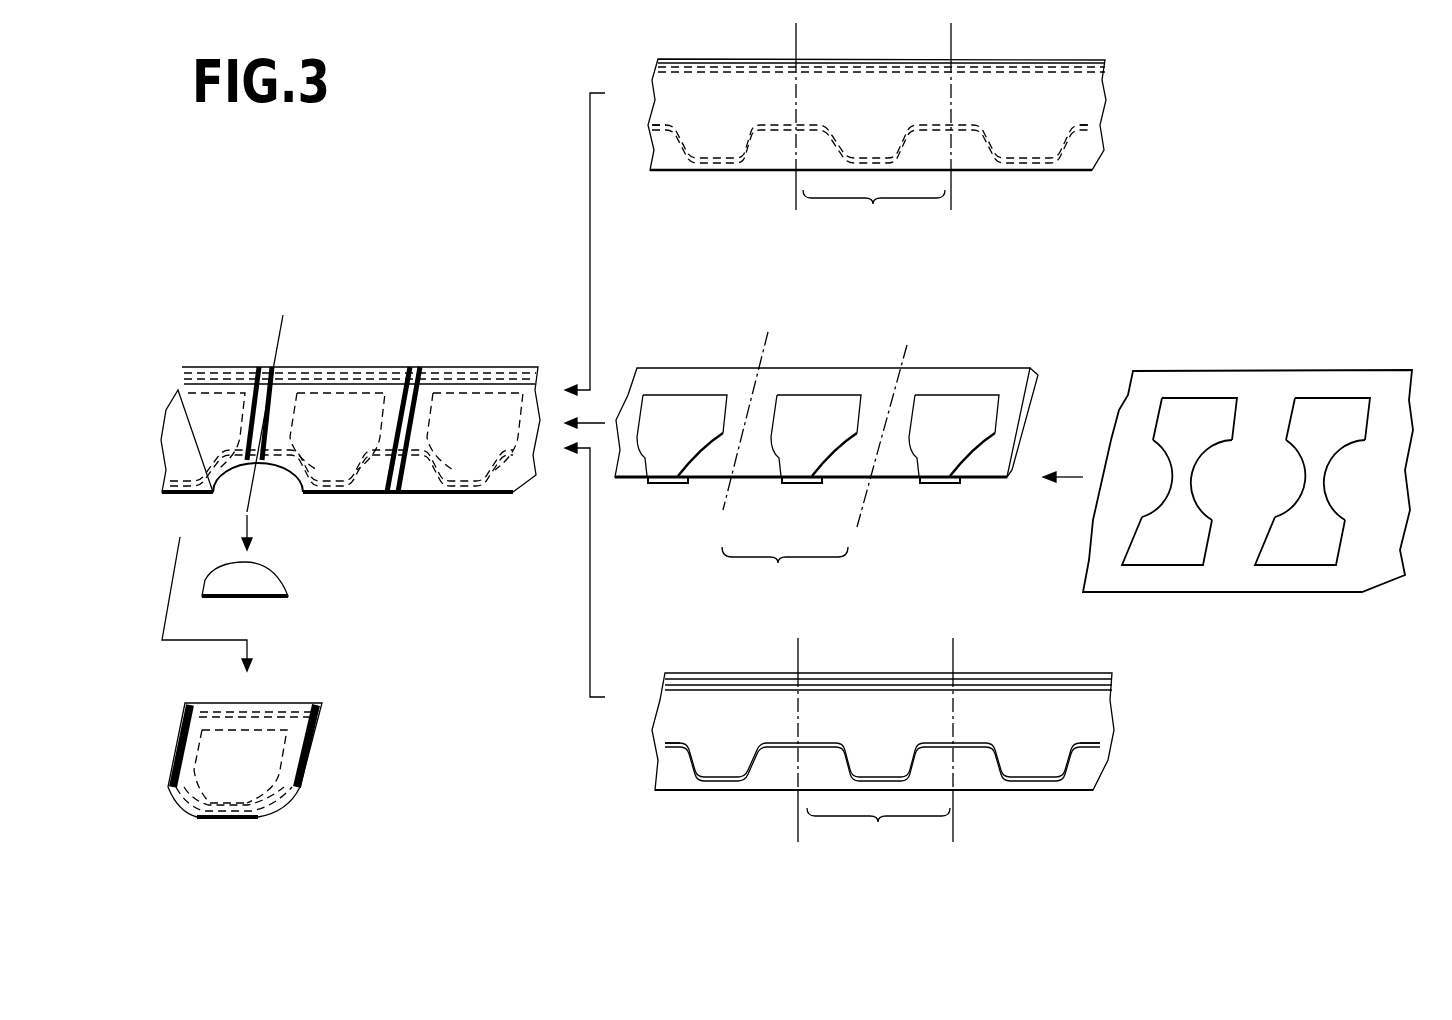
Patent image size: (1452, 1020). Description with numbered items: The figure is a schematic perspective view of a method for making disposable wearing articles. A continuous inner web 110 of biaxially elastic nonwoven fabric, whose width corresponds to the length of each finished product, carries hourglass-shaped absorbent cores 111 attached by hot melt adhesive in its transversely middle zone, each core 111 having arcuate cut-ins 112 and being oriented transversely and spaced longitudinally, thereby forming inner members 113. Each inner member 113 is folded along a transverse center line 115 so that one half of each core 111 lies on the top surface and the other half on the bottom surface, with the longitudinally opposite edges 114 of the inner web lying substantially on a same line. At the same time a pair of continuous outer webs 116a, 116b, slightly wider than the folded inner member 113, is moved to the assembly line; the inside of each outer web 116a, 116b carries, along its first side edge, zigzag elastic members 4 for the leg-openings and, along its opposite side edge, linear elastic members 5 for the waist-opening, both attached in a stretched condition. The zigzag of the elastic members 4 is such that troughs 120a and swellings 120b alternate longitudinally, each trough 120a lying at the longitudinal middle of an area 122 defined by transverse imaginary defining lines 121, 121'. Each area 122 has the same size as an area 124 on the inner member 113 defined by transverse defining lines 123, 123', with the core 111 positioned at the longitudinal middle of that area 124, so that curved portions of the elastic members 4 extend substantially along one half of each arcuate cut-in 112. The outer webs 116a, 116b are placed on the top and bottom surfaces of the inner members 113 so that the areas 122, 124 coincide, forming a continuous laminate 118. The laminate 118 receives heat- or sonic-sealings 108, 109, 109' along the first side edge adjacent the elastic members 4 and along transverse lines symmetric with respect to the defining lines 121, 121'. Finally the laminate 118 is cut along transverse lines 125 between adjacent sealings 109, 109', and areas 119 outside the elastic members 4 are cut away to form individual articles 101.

The zigzag elastic members for the leg-openings 4 is at (1093, 153).
The linear elastic members for the waist-opening 5 is at (1053, 67).
The individual articles 101 is at (162, 727).
The heat- or sonic-sealing 108 is at (332, 495).
The heat- or sonic-sealing 109 is at (297, 544).
The heat- or sonic-sealing 109' is at (247, 567).
The continuous inner web 110 is at (1240, 577).
The absorbent core 111 is at (667, 470).
The arcuate cut-in 112 is at (1166, 478).
The inner member 113 is at (824, 352).
The longitudinally opposite edges of the inner web 114 is at (1033, 380).
The transverse center line 115 is at (988, 483).
The outer web 116a is at (1080, 110).
The outer web 116b is at (1078, 722).
The continuous laminate 118 is at (399, 513).
The areas extending outside the elastic members for the leg-openings 119 is at (275, 582).
The trough 120a is at (712, 160).
The swelling 120b is at (677, 140).
The transverse defining line 121 is at (763, 449).
The transverse defining line 121' is at (992, 449).
The area 122 is at (876, 523).
The transverse defining line 123 is at (715, 448).
The transverse defining line 123' is at (887, 458).
The area 124 is at (785, 578).
The transverse lines 125 is at (282, 337).